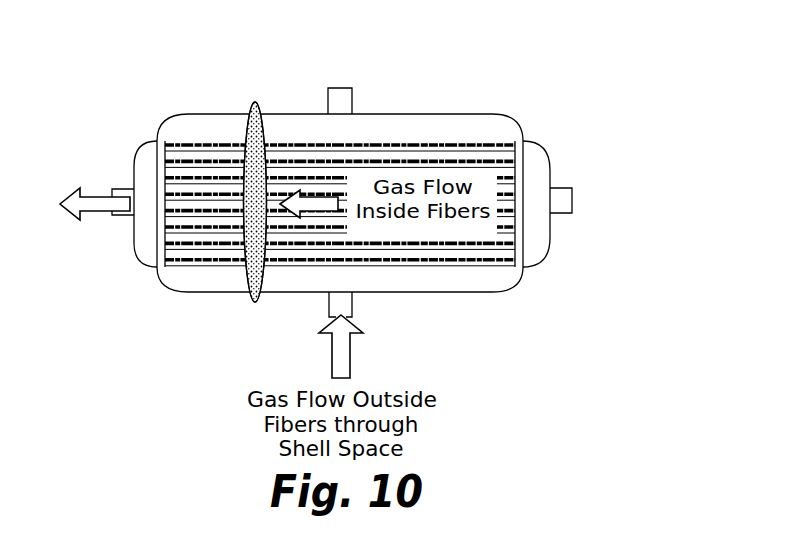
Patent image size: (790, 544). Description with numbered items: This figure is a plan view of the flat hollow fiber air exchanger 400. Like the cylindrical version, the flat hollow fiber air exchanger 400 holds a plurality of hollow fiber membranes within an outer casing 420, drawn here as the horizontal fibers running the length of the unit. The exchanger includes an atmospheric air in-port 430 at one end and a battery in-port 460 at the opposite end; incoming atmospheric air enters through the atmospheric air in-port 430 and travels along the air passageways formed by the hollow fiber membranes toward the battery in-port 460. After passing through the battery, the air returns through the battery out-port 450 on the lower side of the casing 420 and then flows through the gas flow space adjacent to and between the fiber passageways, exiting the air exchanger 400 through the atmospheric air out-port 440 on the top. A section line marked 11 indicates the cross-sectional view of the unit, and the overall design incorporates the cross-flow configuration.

The flat hollow fiber air exchanger 400 is at (423, 94).
The outer casing 420 is at (503, 267).
The atmospheric air in-port 430 is at (572, 196).
The atmospheric air out-port 440 is at (337, 92).
The battery out-port 450 is at (343, 305).
The battery in-port 460 is at (112, 190).
The section line 11- 11 is at (253, 93).